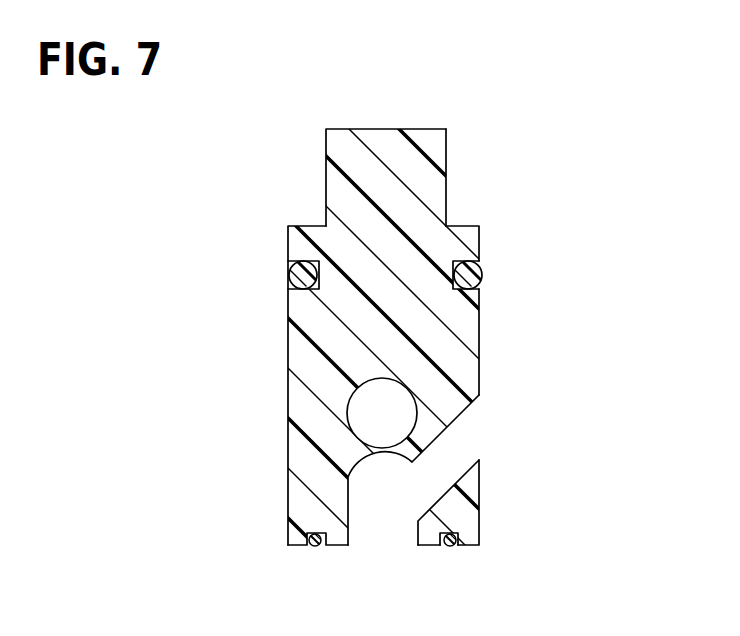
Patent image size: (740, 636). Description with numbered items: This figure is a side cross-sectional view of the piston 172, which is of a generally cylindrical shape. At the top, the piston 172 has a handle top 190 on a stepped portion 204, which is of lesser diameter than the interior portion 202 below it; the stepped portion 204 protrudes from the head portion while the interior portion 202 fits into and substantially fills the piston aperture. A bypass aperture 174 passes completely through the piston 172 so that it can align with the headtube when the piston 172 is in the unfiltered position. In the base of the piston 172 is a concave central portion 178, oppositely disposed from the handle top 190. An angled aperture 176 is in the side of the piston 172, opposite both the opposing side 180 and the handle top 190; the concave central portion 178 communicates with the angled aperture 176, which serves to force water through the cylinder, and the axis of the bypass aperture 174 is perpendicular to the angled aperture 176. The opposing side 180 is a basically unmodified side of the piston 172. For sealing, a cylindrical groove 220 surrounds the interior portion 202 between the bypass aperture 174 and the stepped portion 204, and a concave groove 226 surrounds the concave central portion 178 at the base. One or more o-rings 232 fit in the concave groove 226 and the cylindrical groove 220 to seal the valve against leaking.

The piston 172 is at (542, 365).
The bypass aperture 174 is at (402, 432).
The angled aperture 176 is at (480, 433).
The concave central portion 178 is at (373, 537).
The opposing side 180 is at (290, 415).
The handle top 190 is at (393, 130).
The interior portion 202 is at (480, 327).
The stepped portion 204 is at (447, 178).
The cylindrical groove 220 is at (479, 262).
The concave groove 226 is at (453, 547).
The o-ring 232 is at (290, 279).